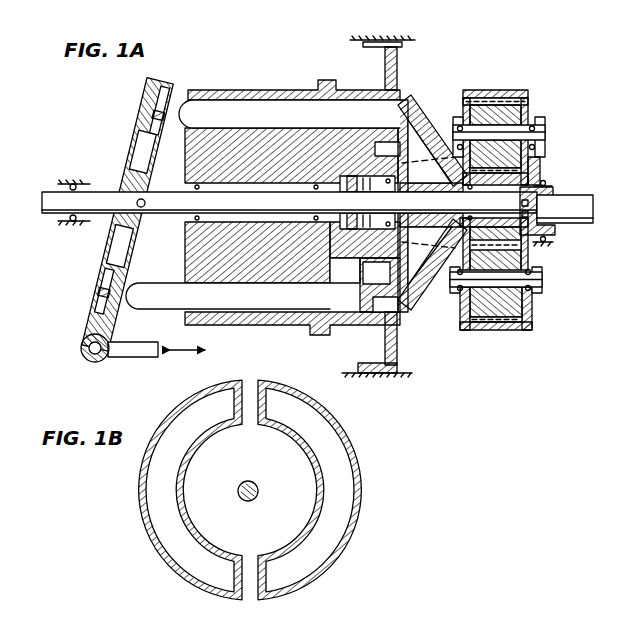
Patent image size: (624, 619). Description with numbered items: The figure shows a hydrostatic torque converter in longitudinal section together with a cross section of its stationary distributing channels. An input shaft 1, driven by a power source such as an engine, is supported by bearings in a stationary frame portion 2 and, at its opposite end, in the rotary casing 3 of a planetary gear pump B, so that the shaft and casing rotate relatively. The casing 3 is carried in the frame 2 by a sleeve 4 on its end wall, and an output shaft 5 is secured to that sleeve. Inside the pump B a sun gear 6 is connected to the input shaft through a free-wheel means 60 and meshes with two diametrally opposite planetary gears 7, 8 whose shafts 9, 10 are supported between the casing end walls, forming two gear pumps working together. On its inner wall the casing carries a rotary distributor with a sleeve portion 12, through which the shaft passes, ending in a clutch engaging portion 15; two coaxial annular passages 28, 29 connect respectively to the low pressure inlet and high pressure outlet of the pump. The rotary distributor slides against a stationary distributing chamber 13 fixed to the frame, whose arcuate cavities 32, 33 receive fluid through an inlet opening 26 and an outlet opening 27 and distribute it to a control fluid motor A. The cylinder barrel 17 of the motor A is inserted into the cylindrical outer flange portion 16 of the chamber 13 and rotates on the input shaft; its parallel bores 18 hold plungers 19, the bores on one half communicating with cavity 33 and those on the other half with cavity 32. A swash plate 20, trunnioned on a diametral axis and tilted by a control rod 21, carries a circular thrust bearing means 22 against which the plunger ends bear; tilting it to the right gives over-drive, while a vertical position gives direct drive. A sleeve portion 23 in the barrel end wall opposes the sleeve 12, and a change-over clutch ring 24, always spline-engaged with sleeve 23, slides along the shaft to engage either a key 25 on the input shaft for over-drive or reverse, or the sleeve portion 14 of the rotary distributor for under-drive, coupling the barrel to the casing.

In FIG. 1A, the input shaft 1 is at (50, 214).
In FIG. 1A, the stationary frame portion 2 is at (74, 182).
In FIG. 1A, the rotary casing 3 is at (532, 160).
In FIG. 1A, the sleeve 4 is at (556, 192).
In FIG. 1A, the output shaft 5 is at (574, 220).
In FIG. 1A, the sun gear 6 is at (513, 233).
In FIG. 1A, the planetary gear 7 is at (503, 110).
In FIG. 1A, the planetary gear 8 is at (480, 312).
In FIG. 1A, the shaft of planetary gear 9 is at (532, 117).
In FIG. 1A, the shaft of planetary gear 10 is at (500, 296).
In FIG. 1A, the sleeve portion 12 is at (368, 180).
In FIG. 1B, the stationary distributing chamber 13 is at (192, 394).
In FIG. 1A, the sleeve portion 14 is at (348, 305).
In FIG. 1A, the clutch engaging portion 15 is at (348, 176).
In FIG. 1A, the outer flange portion 16 is at (378, 370).
In FIG. 1A, the cylinder barrel 17 is at (190, 245).
In FIG. 1A, the bores 18 is at (292, 305).
In FIG. 1A, the plungers 19 is at (231, 108).
In FIG. 1A, the swash plate 20 is at (142, 112).
In FIG. 1A, the control rod 21 is at (130, 357).
In FIG. 1A, the thrust bearing means 22 is at (152, 100).
In FIG. 1A, the sleeve portion 23 is at (350, 183).
In FIG. 1A, the change-over clutch ring 24 is at (345, 238).
In FIG. 1A, the key 25 is at (340, 207).
In FIG. 1A, the inlet opening 26 is at (400, 332).
In FIG. 1A, the outlet opening 27 is at (386, 144).
In FIG. 1A, the annular passage 28 is at (434, 106).
In FIG. 1A, the annular passage 29 is at (442, 130).
In FIG. 1B, the cavity 32 is at (160, 540).
In FIG. 1A, the cavity 33 is at (337, 314).
In FIG. 1B, the cavity 33 is at (338, 454).
In FIG. 1A, the free-wheel means 60 is at (546, 180).
In FIG. 1A, the control fluid motor A is at (273, 88).
In FIG. 1A, the input pump B is at (463, 86).
In FIG. 1A, the shaft S is at (176, 200).
In FIG. 1B, the shaft S is at (232, 478).